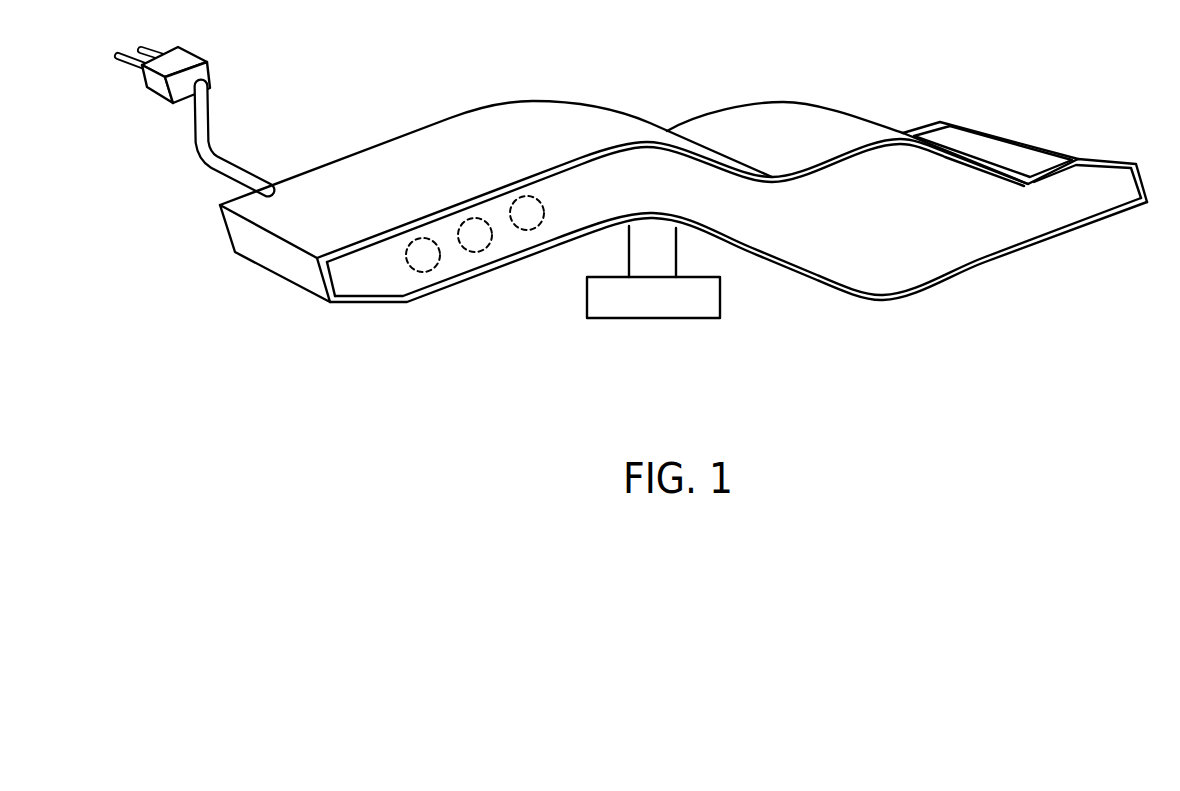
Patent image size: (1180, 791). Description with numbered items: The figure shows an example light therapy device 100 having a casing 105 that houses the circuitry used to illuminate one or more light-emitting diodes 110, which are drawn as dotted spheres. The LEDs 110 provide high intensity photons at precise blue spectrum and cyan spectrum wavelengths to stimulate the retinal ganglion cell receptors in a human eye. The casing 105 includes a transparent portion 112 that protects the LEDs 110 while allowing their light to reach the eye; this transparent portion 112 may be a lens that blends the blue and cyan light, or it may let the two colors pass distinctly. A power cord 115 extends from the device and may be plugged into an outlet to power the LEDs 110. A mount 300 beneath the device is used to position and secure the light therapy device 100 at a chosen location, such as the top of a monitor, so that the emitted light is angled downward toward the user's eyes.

The light therapy device 100 is at (671, 49).
The casing 105 is at (1072, 142).
The light-emitting diodes 110 is at (527, 230).
The transparent portion 112 is at (833, 260).
The power cord 115 is at (208, 113).
The mount 300 is at (588, 293).